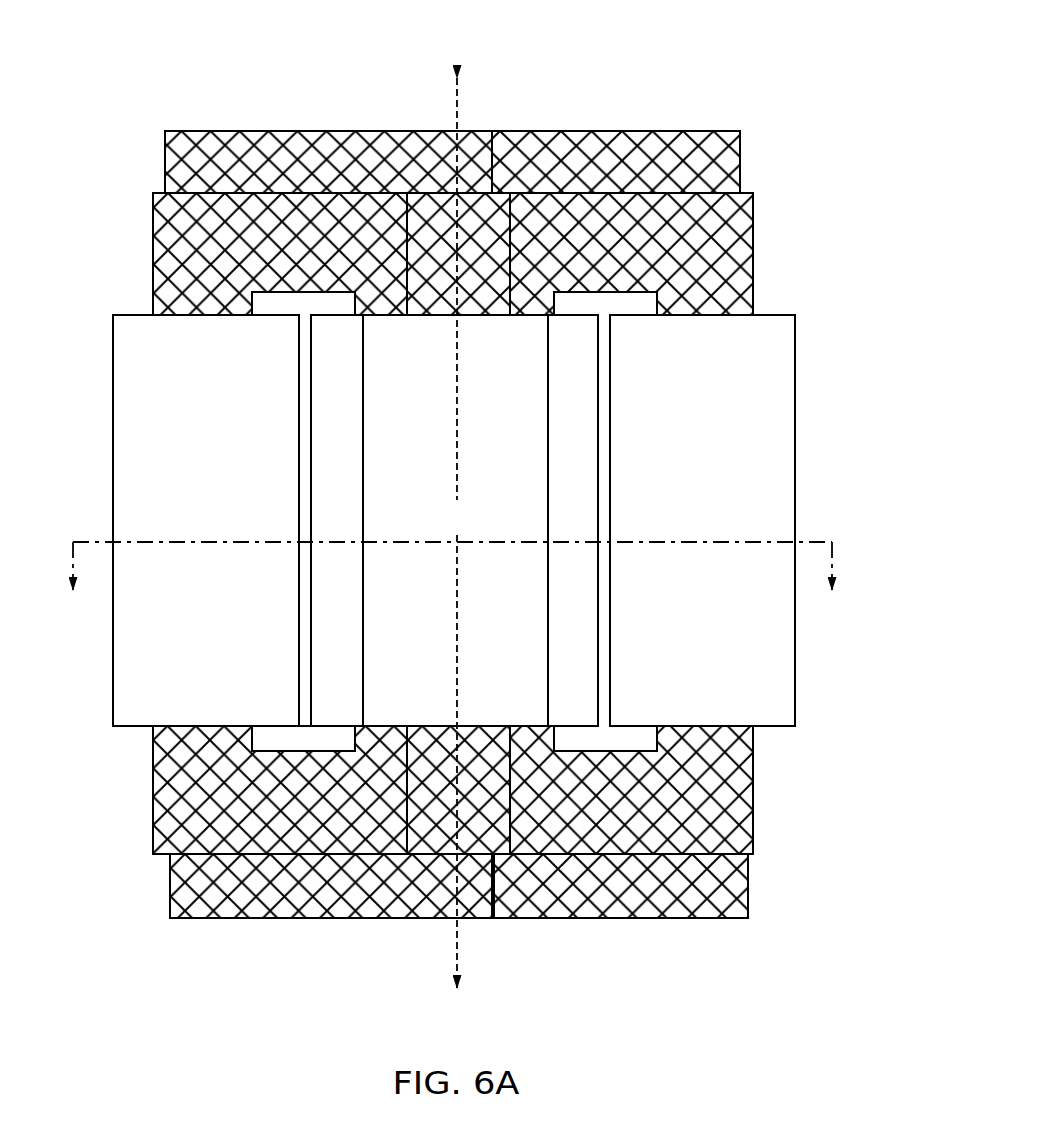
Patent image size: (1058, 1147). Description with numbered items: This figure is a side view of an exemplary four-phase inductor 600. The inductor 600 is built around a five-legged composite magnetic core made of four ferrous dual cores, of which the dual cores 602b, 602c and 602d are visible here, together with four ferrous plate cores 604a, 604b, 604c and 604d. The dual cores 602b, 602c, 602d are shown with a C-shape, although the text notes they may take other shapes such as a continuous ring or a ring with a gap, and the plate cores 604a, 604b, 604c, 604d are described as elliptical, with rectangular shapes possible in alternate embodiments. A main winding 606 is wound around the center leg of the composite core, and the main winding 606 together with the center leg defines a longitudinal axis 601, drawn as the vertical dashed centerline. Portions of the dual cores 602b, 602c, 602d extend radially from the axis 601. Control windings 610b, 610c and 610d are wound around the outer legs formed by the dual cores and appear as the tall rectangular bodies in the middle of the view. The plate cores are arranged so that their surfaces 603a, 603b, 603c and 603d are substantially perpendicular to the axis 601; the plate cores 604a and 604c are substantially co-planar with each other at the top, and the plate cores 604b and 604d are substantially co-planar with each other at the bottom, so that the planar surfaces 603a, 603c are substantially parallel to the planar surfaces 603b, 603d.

The four-phase inductor 600 is at (784, 75).
The longitudinal axis 601 is at (460, 945).
The ferrous dual core 602b is at (738, 258).
The ferrous dual core 602c is at (481, 217).
The ferrous dual core 602d is at (168, 248).
The planar surface 603a is at (579, 128).
The planar surface 603b is at (579, 921).
The planar surface 603c is at (213, 128).
The planar surface 603d is at (221, 921).
The ferrous plate core 604a is at (650, 145).
The ferrous plate core 604b is at (657, 905).
The ferrous plate core 604c is at (292, 150).
The ferrous plate core 604d is at (316, 905).
The main winding 606 is at (330, 330).
The control winding 610b is at (717, 527).
The control winding 610c is at (477, 527).
The control winding 610d is at (227, 527).